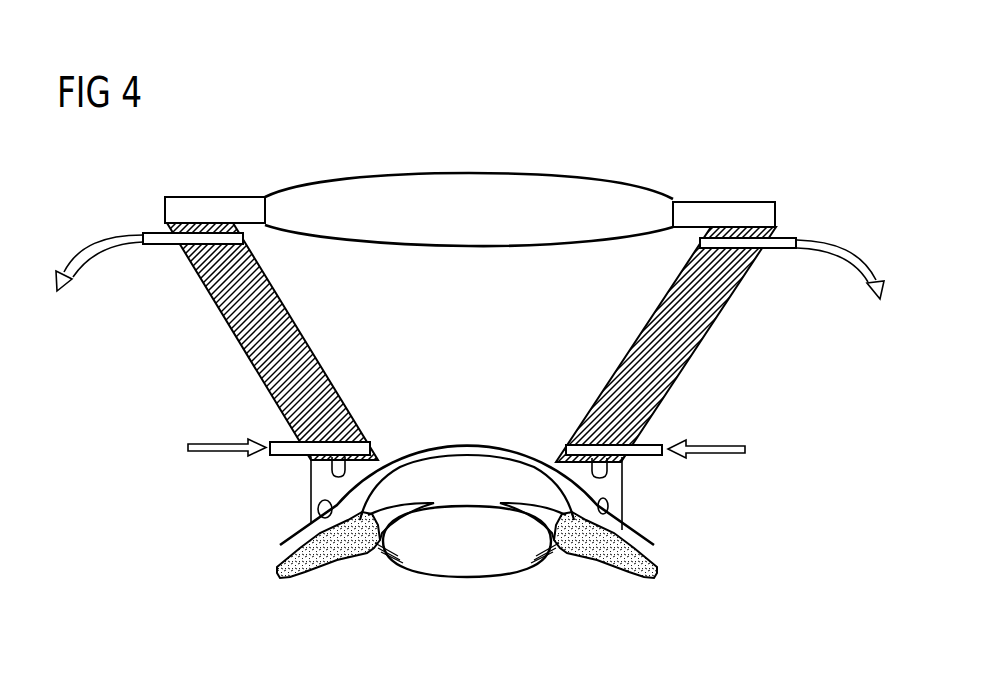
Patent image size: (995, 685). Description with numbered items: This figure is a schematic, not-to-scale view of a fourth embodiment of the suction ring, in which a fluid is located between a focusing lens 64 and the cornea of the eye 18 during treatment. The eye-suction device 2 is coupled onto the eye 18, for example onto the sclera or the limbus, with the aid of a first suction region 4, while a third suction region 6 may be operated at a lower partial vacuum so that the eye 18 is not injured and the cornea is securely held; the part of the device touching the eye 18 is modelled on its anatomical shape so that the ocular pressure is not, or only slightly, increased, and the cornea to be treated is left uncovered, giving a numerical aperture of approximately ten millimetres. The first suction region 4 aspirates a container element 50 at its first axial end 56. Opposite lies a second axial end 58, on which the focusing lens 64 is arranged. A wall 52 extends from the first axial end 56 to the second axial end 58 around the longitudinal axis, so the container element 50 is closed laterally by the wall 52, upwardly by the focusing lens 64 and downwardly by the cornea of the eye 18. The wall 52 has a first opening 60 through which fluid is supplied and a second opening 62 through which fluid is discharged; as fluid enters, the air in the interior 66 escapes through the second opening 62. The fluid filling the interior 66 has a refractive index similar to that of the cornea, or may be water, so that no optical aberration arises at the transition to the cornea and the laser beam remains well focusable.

The eye-suction device 2 is at (612, 490).
The first suction region 4 is at (607, 518).
The third suction region 6 is at (610, 468).
The eye 18 is at (455, 599).
The container element 50 is at (445, 338).
The wall 52 is at (683, 348).
The first axial end 56 is at (361, 444).
The second axial end 58 is at (196, 220).
The first opening 60 is at (287, 457).
The second opening 62 is at (157, 247).
The focusing lens 64 is at (470, 172).
The interior 66 is at (310, 323).